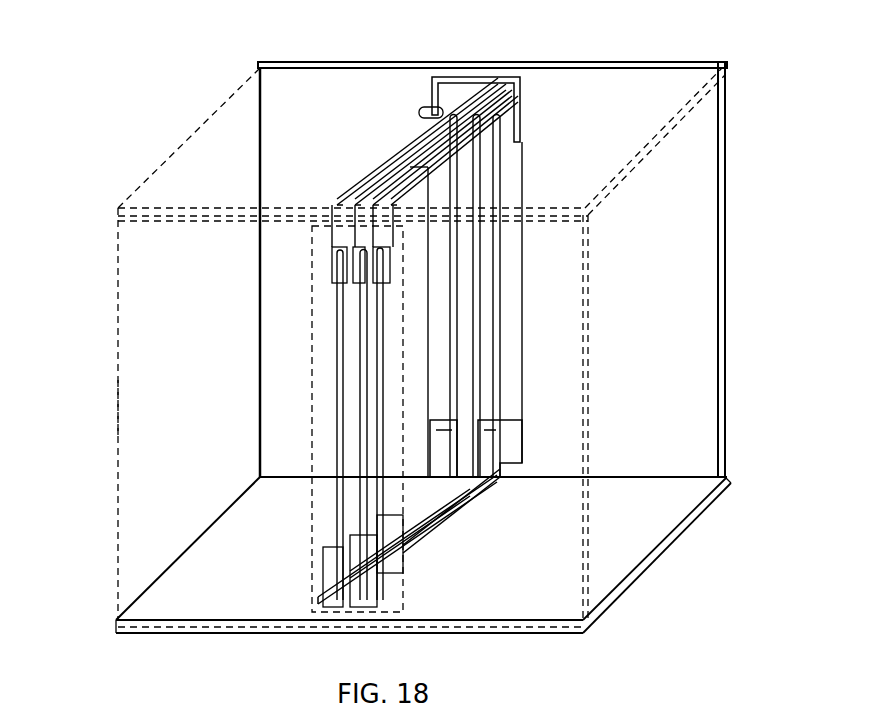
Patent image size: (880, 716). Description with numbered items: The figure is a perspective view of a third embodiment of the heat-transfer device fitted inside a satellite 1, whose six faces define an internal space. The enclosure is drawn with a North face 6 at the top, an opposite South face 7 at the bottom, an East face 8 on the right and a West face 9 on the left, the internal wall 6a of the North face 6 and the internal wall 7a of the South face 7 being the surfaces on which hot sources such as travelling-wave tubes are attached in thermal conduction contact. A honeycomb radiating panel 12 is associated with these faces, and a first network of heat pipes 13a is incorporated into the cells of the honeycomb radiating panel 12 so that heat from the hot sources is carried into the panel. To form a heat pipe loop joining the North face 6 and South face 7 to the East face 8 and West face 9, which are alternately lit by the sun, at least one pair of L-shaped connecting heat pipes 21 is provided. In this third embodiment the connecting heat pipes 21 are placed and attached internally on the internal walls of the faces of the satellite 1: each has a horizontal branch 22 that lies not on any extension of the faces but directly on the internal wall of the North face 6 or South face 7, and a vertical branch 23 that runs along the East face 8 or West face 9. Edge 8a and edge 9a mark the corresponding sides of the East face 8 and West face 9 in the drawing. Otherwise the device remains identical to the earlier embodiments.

The satellite 1 is at (737, 134).
The North face 6 is at (620, 80).
The internal wall of the North face 6a is at (157, 195).
The South face 7 is at (650, 560).
The internal wall of the South face 7a is at (595, 575).
The East face 8 is at (698, 305).
The inner surface of side plate 8a is at (635, 258).
The West face 9 is at (137, 532).
The edge of left side plate 9a is at (183, 413).
The honeycomb radiating panel 12 is at (525, 275).
The first network of heat pipes 13a is at (407, 157).
The connecting heat pipes 21 is at (320, 250).
The horizontal branch 22 is at (417, 185).
The vertical branch 23 is at (383, 242).